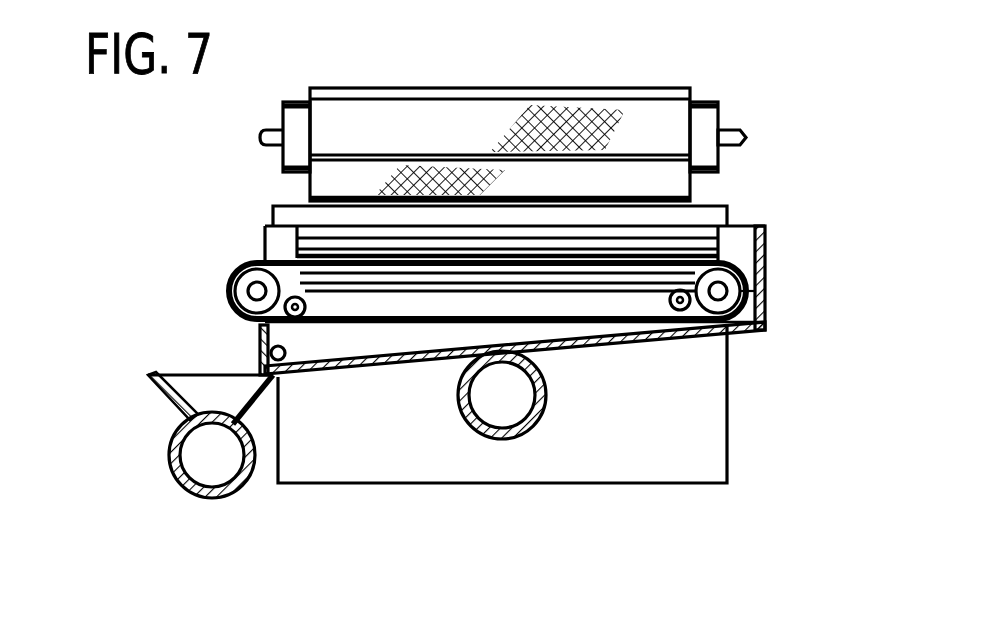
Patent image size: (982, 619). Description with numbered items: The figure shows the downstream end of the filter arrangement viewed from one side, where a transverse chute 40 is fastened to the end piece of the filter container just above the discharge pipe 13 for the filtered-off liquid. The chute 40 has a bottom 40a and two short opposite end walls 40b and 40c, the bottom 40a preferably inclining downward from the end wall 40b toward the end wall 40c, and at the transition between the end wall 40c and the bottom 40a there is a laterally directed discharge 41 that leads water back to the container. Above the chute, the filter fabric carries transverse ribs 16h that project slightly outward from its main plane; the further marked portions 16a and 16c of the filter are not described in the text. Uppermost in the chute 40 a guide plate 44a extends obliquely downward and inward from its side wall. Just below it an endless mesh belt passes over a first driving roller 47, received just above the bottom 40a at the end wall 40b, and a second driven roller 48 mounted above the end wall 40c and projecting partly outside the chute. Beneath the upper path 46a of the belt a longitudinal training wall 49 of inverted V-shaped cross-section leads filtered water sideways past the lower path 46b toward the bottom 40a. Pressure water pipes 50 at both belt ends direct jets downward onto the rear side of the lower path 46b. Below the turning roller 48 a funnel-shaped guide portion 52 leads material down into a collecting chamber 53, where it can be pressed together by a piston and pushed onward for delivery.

The transverse ribs 16h is at (348, 195).
The fixing unit heater 16a is at (560, 112).
The fixing unit end bracket with pin 16c is at (702, 102).
The guide plate 44a is at (677, 233).
The transverse chute 40 is at (790, 286).
The end wall 40b is at (767, 248).
The end wall 40c is at (257, 335).
The bottom 40a is at (710, 337).
The laterally directed discharge 41 is at (262, 352).
The driving roller 47 is at (762, 313).
The driven roller 48 is at (253, 245).
The training wall 49 is at (558, 300).
The pressure water pipe 50 is at (322, 325).
The upper path of the belt 46a is at (613, 287).
The lower path of the belt 46b is at (427, 340).
The discharge pipe 13 is at (502, 439).
The funnel-shaped guide portion 52 is at (172, 403).
The collecting chamber 53 is at (221, 474).